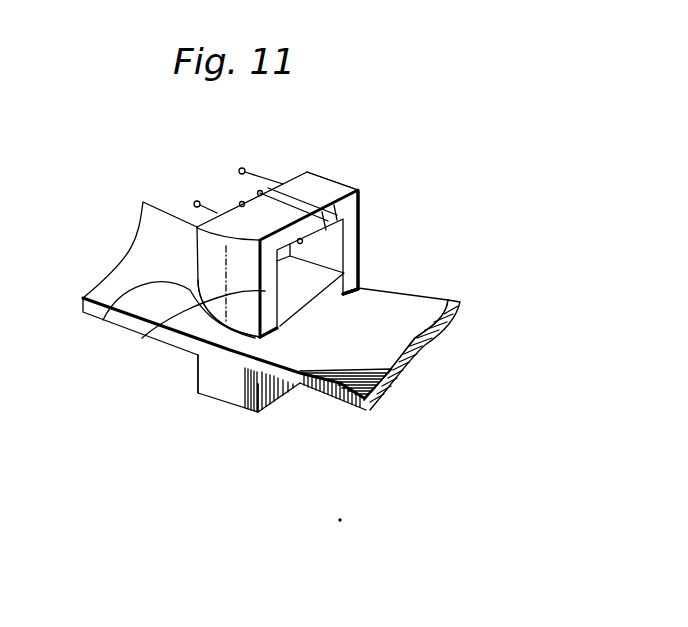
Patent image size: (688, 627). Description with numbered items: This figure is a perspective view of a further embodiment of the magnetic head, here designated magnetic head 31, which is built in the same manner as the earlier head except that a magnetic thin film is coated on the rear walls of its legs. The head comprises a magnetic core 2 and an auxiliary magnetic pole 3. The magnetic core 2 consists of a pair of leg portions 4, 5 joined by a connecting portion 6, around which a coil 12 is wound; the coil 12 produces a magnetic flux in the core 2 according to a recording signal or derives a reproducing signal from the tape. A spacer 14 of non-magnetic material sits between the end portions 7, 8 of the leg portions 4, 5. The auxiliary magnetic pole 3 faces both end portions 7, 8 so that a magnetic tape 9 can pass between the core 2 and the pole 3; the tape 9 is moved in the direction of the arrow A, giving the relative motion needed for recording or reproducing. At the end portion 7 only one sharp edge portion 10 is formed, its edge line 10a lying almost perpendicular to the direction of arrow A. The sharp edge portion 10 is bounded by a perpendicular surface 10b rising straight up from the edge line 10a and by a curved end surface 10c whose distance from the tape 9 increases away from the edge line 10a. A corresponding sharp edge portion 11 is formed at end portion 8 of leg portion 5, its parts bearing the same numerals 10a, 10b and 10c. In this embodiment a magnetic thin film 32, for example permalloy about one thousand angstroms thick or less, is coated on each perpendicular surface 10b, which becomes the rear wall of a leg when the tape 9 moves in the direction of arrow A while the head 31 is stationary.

The magnetic core 2 is at (360, 218).
The auxiliary magnetic pole 3 is at (226, 392).
The leg portion 4 is at (100, 320).
The leg portion 5 is at (400, 258).
The connecting portion 6 is at (330, 205).
The end portion 7 is at (225, 375).
The end portion 8 is at (368, 283).
The magnetic tape 9 is at (462, 301).
The sharp edge portion 10 is at (270, 340).
The edge line 10a is at (364, 293).
The perpendicular surface 10b is at (354, 246).
The end surface 10c is at (142, 338).
The sharp edge portion 11 is at (428, 327).
The coil 12 is at (258, 180).
The spacer 14 is at (318, 299).
The magnetic head 31 is at (352, 294).
The magnetic thin film 32 is at (352, 186).
The arrow A is at (313, 339).